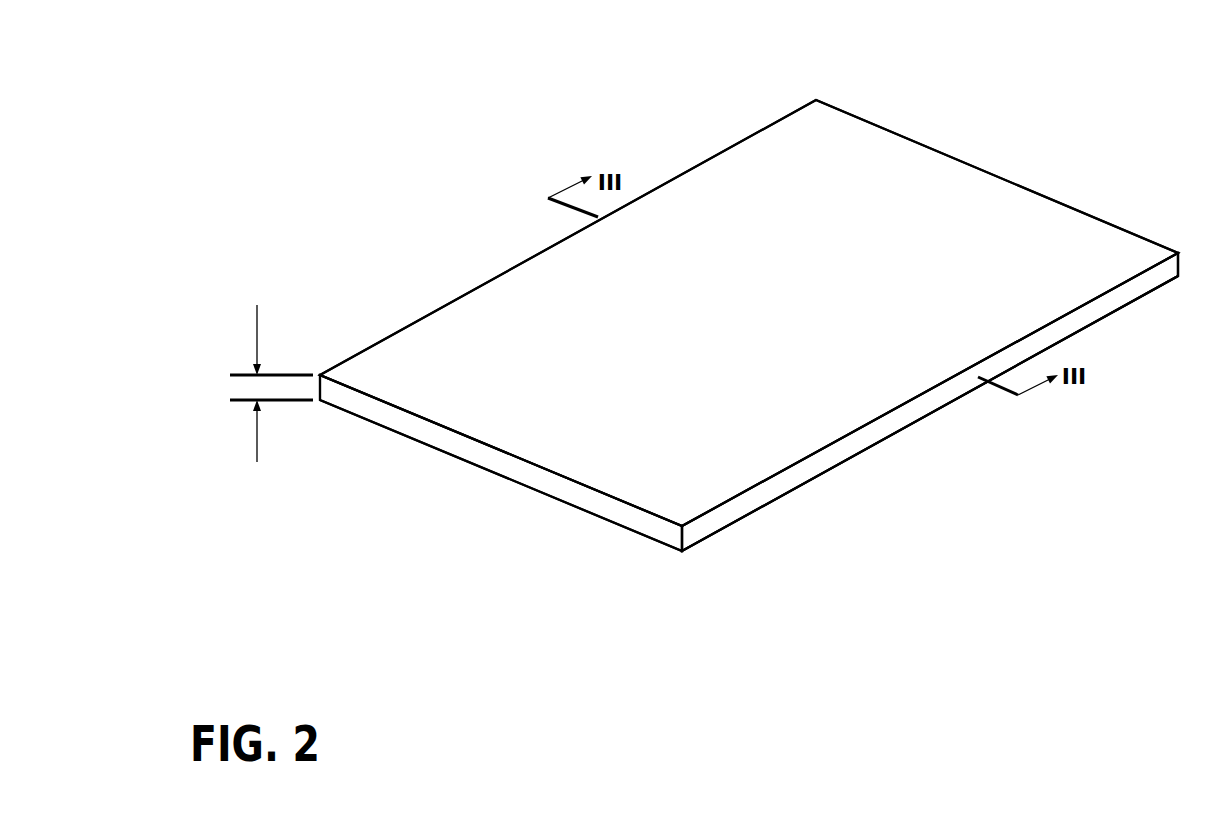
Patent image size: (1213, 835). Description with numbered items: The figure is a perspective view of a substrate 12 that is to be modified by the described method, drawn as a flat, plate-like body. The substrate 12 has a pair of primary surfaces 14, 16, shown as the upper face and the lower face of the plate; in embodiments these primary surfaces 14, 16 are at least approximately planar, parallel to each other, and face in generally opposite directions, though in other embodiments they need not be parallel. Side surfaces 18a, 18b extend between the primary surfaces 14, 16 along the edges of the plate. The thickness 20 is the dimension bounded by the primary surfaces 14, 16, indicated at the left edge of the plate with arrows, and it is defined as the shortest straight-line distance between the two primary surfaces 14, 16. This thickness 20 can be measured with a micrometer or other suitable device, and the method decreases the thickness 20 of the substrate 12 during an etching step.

The substrate 12 is at (470, 154).
The primary surface 14 is at (909, 218).
The primary surface 16 is at (930, 422).
The side surface 18a is at (822, 467).
The side surface 18b is at (505, 468).
The thickness 20 is at (257, 328).